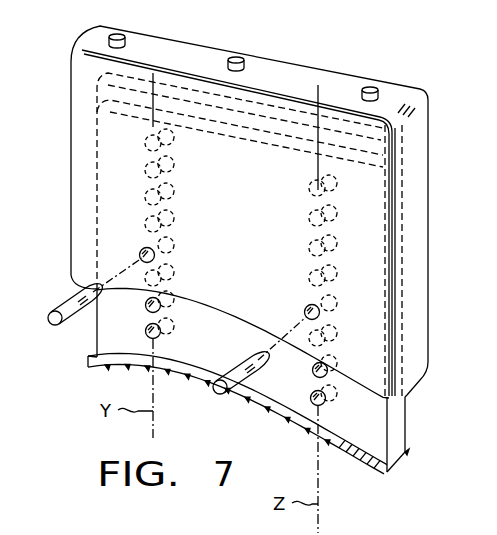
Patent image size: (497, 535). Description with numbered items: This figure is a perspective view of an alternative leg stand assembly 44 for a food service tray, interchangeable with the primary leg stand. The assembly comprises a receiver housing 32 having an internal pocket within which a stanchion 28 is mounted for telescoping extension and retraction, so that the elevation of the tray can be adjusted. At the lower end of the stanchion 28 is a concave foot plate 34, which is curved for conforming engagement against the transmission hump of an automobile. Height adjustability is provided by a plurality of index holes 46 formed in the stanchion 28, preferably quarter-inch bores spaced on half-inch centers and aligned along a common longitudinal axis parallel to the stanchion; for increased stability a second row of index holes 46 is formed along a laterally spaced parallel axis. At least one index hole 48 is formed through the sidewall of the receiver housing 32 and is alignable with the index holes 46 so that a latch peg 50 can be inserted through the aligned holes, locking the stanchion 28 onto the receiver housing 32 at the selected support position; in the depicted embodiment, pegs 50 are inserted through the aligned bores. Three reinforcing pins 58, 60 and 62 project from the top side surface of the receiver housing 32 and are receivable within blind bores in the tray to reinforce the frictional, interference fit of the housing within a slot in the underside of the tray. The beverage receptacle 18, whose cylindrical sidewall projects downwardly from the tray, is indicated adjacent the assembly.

The beverage receptacle 18 is at (496, 534).
The stanchion 28 is at (394, 445).
The receiver housing 32 is at (420, 298).
The concave foot plate 34 is at (384, 476).
The alternative leg stand assembly 44 is at (445, 106).
The index holes 46 is at (148, 306).
The index hole 48 is at (310, 310).
The latch peg 50 is at (62, 291).
The reinforcing pin 58 is at (108, 37).
The reinforcing pin 60 is at (247, 24).
The reinforcing pin 62 is at (356, 87).